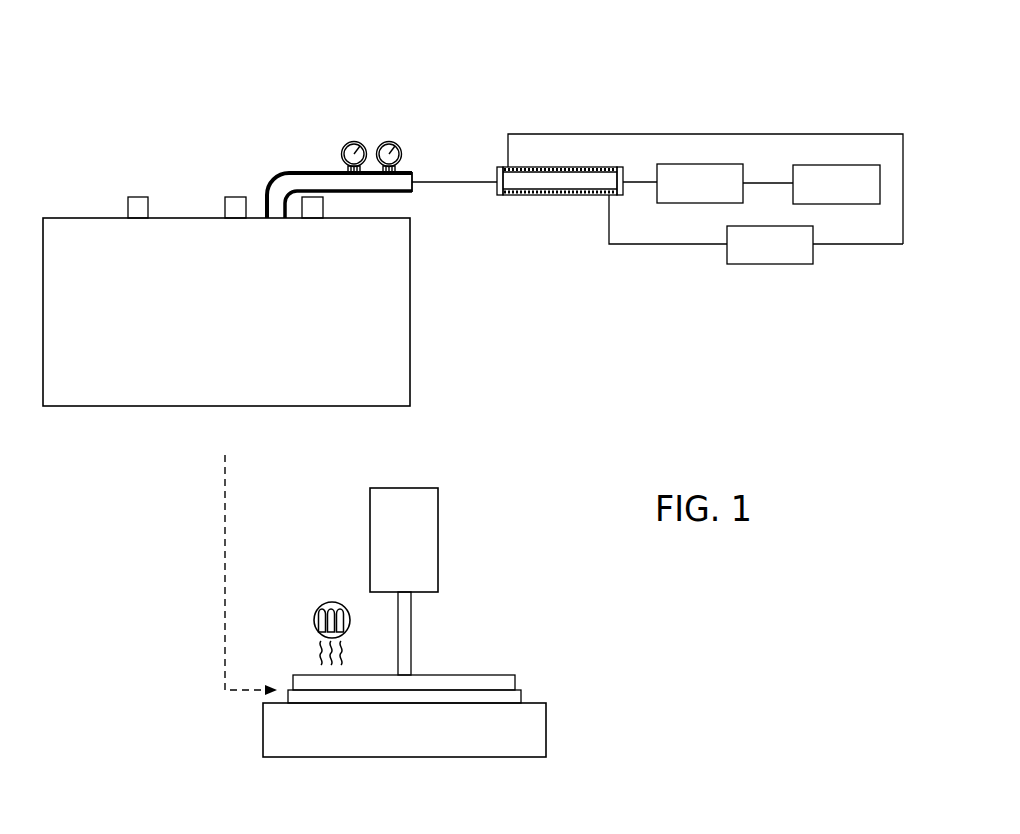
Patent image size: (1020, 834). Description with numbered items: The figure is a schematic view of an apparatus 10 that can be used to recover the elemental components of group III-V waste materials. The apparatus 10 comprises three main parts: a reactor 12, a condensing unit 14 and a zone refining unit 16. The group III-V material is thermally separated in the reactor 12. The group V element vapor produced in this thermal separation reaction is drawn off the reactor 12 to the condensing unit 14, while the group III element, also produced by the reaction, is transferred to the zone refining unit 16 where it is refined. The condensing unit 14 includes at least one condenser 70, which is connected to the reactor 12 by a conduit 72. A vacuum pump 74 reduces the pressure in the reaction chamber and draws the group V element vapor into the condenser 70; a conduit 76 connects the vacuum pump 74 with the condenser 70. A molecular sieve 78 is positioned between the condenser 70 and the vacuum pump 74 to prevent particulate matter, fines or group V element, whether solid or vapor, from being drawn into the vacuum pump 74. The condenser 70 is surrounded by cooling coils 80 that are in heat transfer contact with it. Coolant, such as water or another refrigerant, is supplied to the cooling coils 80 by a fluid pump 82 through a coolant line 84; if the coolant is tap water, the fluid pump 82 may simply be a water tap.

The apparatus 10 is at (190, 95).
The reactor 12 is at (445, 314).
The condensing unit 14 is at (658, 106).
The zone refining unit 16 is at (210, 724).
The condenser 70 is at (568, 180).
The conduit 72 is at (463, 181).
The vacuum pump 74 is at (833, 165).
The conduit 76 is at (768, 183).
The molecular sieve 78 is at (707, 164).
The cooling coils 80 is at (550, 196).
The fluid pump 82 is at (773, 264).
The coolant line 84 is at (658, 244).